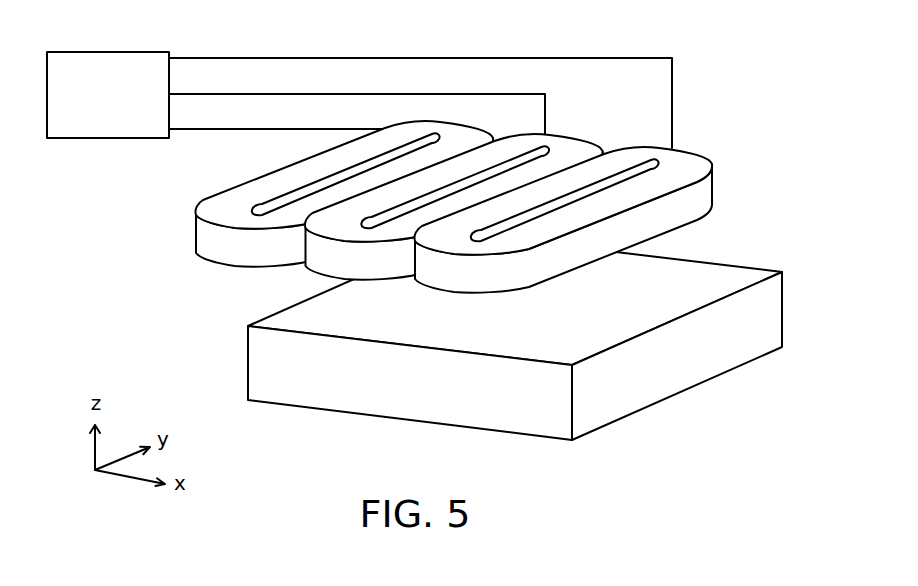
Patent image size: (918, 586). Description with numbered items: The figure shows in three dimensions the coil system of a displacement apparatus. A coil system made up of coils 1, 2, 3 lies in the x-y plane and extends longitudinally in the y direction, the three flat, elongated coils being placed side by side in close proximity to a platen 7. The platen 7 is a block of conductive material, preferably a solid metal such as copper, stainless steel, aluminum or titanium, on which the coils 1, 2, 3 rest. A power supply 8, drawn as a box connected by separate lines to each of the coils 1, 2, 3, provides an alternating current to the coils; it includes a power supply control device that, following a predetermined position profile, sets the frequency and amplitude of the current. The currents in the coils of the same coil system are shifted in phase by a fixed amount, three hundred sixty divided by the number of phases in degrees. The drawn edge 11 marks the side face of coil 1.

The coil 1 is at (312, 194).
The coil 2 is at (317, 267).
The coil 3 is at (690, 158).
The platen 7 is at (770, 308).
The power supply 8 is at (92, 60).
The coil side face 11 is at (205, 233).